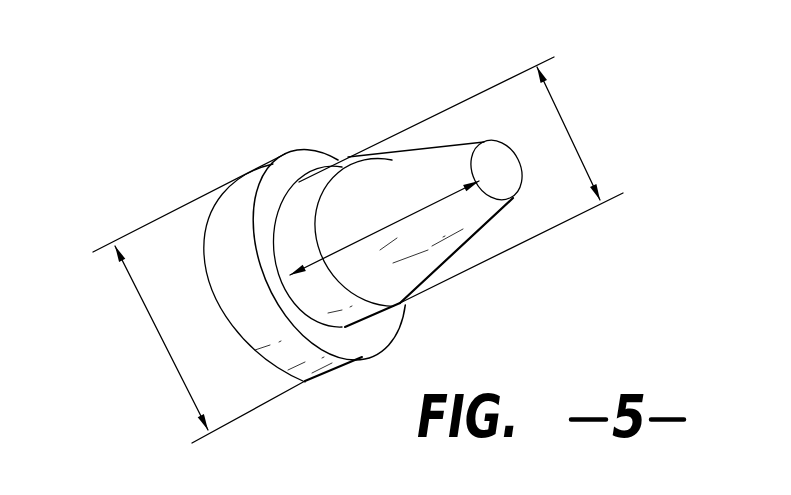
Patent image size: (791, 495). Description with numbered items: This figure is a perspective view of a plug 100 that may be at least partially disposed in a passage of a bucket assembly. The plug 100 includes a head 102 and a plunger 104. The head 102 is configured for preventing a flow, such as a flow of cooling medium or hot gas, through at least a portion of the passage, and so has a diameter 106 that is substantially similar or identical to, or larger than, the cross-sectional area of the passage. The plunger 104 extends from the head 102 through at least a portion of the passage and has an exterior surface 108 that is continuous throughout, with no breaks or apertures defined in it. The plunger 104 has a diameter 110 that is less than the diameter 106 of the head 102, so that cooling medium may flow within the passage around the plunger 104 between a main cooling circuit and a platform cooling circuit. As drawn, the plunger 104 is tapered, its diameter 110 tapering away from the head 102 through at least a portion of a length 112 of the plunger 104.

The plug 100 is at (340, 239).
The head 102 is at (246, 200).
The plunger 104 is at (458, 220).
The diameter of the head 106 is at (153, 325).
The exterior surface 108 is at (468, 146).
The diameter of the plunger 110 is at (575, 148).
The length of the plunger 112 is at (412, 213).